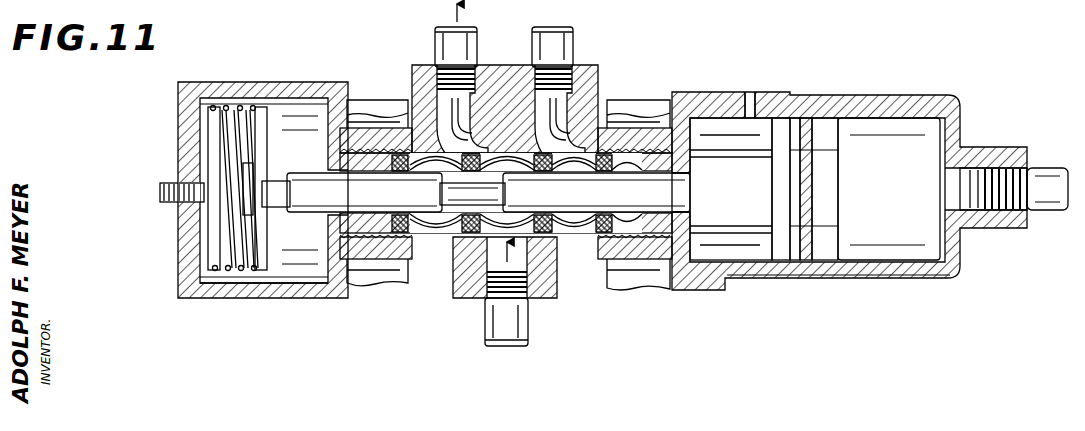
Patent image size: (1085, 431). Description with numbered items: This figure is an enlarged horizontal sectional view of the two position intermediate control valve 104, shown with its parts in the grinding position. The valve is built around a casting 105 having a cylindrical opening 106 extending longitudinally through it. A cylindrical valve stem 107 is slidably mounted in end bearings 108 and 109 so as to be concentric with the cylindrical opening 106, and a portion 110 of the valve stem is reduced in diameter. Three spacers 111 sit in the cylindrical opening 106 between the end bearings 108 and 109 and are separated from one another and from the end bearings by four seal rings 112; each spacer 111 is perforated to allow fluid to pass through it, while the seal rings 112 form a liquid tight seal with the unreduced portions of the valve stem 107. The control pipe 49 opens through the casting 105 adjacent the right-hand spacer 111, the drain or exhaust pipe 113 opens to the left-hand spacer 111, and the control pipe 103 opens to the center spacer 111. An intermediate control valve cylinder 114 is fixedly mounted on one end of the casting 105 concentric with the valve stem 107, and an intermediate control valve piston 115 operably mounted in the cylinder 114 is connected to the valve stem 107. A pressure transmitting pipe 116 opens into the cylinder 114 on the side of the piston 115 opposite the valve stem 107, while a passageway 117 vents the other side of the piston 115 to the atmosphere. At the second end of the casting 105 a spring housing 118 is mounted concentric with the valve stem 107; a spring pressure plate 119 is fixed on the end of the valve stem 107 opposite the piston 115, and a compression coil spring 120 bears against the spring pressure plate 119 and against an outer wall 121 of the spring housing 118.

The control pipe 49 is at (572, 45).
The control pipe 103 is at (530, 323).
The two position intermediate control valve 104 is at (513, 70).
The casting 105 is at (457, 297).
The cylindrical opening 106 is at (440, 233).
The valve stem 107 is at (690, 190).
The end bearing 108 is at (372, 176).
The end bearing 109 is at (625, 176).
The reduced portion of the valve stem 110 is at (497, 192).
The spacer 111 is at (508, 119).
The seal ring 112 is at (390, 128).
The drain or exhaust pipe 113 is at (437, 46).
The intermediate control valve cylinder 114 is at (815, 278).
The intermediate control valve piston 115 is at (803, 100).
The pressure transmitting pipe 116 is at (1045, 175).
The passageway 117 is at (752, 100).
The spring housing 118 is at (225, 298).
The spring pressure plate 119 is at (268, 245).
The compression coil spring 120 is at (228, 107).
The outer wall 121 is at (185, 241).